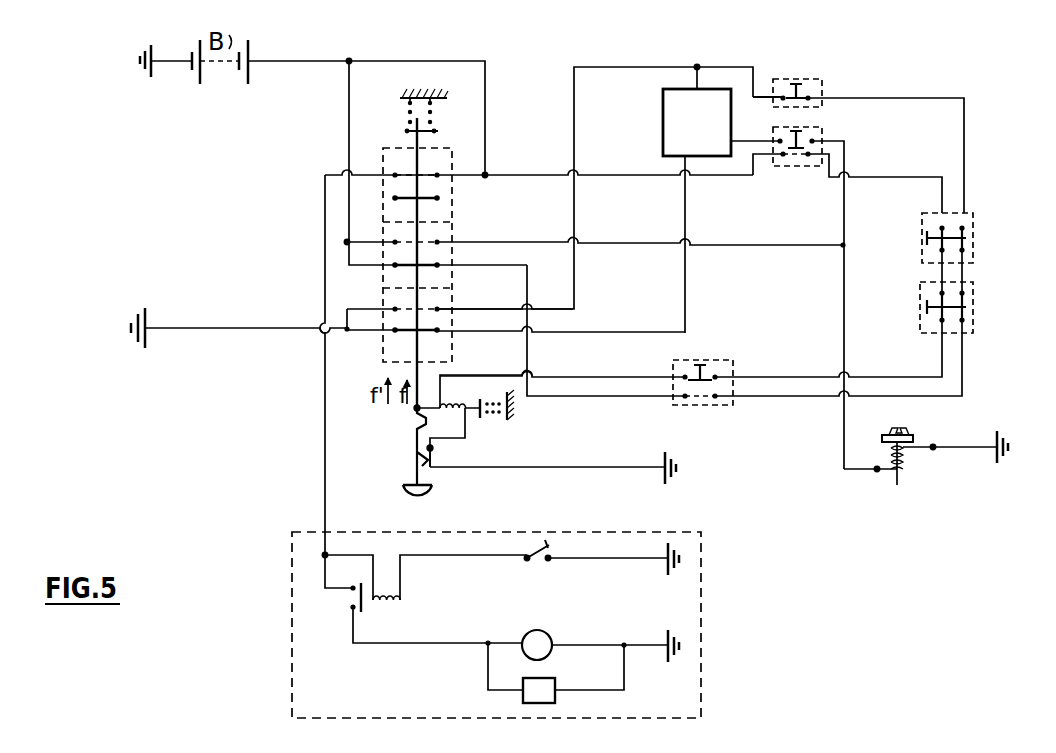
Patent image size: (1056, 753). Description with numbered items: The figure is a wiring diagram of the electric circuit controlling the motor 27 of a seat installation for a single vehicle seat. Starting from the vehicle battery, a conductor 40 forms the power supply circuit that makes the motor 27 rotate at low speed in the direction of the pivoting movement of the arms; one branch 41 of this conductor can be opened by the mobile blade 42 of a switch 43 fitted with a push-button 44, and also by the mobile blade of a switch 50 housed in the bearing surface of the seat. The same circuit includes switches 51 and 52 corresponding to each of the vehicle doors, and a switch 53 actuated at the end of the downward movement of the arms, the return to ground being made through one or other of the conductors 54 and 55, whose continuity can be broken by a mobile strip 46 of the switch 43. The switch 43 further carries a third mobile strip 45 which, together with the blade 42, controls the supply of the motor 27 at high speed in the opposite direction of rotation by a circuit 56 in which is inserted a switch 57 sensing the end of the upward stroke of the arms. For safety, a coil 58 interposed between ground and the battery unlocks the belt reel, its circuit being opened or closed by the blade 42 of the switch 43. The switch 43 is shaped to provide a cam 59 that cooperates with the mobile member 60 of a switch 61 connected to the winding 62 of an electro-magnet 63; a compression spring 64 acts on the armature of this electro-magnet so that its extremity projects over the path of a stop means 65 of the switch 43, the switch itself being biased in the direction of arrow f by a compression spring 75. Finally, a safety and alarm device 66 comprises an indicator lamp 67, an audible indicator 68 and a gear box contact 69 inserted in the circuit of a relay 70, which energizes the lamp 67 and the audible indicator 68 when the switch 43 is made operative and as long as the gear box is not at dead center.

The motor 27 is at (663, 118).
The conductor 40 is at (300, 46).
The branch 41 is at (348, 118).
The mobile blade 42 is at (438, 266).
The switch 43 is at (403, 454).
The push-button 44 is at (427, 508).
The third mobile strip 45 is at (440, 198).
The mobile strip 46 is at (436, 330).
The switch 50 is at (702, 406).
The switch 51 is at (974, 296).
The switch 52 is at (974, 240).
The switch 53 is at (795, 79).
The conductor 54 is at (686, 224).
The conductor 55 is at (650, 52).
The circuit 56 is at (833, 210).
The switch 57 is at (820, 130).
The coil 58 is at (914, 465).
The cam 59 is at (412, 460).
The mobile member 60 is at (429, 467).
The switch 61 is at (440, 456).
The winding 62 is at (443, 397).
The electro-magnet 63 is at (472, 394).
The compression spring 64 is at (495, 413).
The stop means 65 is at (412, 418).
The safety and alarm device 66 is at (698, 602).
The indicator lamp 67 is at (538, 632).
The audible indicator 68 is at (549, 680).
The gear box contact 69 is at (536, 547).
The relay 70 is at (388, 609).
The compression spring 75 is at (433, 112).